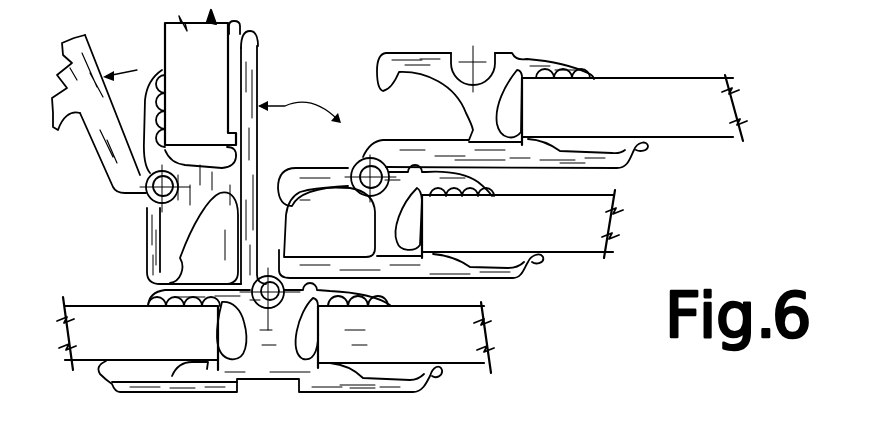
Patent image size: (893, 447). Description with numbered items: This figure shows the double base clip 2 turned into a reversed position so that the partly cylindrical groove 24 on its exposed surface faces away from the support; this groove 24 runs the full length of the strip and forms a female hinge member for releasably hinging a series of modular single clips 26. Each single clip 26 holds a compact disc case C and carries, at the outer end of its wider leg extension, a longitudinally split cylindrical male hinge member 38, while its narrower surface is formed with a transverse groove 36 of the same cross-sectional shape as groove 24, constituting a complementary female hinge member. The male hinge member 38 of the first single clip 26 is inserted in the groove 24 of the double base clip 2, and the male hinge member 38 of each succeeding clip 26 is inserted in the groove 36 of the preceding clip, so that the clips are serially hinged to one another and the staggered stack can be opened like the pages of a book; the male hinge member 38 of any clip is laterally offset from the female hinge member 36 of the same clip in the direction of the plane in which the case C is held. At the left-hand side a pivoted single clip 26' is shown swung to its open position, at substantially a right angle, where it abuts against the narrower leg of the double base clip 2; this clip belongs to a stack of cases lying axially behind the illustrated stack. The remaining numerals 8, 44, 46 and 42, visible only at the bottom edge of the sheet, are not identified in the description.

The double base clip 2 is at (193, 397).
The single clip 26 is at (465, 157).
The rotated connector profile 26' is at (196, 152).
The case C is at (211, 47).
The partly cylindrical groove 24 is at (266, 276).
The transverse groove 36 is at (356, 160).
The male hinge member 38 is at (279, 281).
The element 8 is at (518, 439).
The element 44 is at (553, 439).
The element 46 is at (578, 439).
The element 42 is at (651, 439).